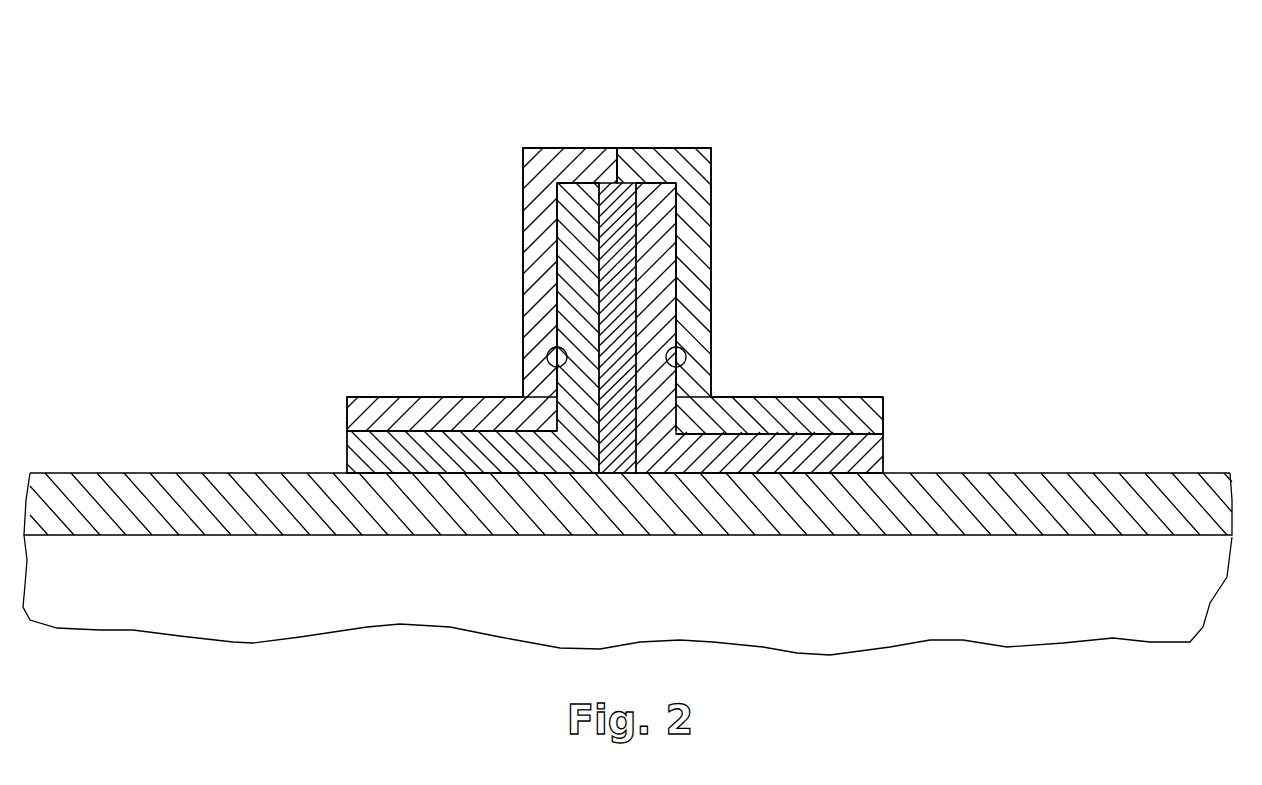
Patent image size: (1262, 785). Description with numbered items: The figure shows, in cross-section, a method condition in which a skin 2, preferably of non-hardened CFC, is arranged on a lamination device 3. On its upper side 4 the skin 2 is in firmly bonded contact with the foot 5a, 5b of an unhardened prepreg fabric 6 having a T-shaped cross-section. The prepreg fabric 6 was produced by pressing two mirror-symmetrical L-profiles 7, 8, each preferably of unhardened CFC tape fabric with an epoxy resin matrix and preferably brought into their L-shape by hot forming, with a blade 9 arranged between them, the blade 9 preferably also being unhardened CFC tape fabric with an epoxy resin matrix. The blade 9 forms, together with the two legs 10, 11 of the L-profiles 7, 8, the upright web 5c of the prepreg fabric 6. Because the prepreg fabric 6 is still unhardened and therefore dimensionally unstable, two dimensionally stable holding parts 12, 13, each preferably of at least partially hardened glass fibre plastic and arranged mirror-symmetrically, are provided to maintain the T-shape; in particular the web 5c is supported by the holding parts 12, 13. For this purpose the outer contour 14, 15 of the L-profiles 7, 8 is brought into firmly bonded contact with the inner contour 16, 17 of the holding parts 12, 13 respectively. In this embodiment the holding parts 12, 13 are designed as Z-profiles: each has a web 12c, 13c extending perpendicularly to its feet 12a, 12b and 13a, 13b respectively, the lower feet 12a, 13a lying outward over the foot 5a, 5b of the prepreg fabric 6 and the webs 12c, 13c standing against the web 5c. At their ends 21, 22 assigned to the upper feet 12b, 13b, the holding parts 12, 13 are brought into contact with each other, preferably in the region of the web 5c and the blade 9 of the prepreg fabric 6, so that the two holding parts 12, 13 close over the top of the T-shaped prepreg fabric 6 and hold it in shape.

The skin 2 is at (1090, 487).
The lamination device 3 is at (609, 604).
The upper side 4 is at (995, 460).
The foot 5a is at (370, 453).
The foot 5b is at (863, 457).
The web 5c is at (670, 236).
The unhardened prepreg fabric 6 is at (561, 96).
The L-profile 7 is at (674, 155).
The L-profile 8 is at (561, 156).
The blade 9 is at (660, 150).
The leg 10 is at (570, 210).
The leg 11 is at (678, 188).
The holding part 12 is at (497, 325).
The foot 12a is at (388, 408).
The foot 12b is at (540, 148).
The web 12c is at (535, 242).
The holding part 13 is at (738, 324).
The foot 13a is at (843, 410).
The foot 13b is at (703, 148).
The web 13c is at (698, 265).
The outer contour 14 is at (560, 292).
The outer contour 15 is at (670, 305).
The inner contour 16 is at (560, 368).
The inner contour 17 is at (676, 368).
The end 21 is at (605, 160).
The end 22 is at (627, 160).